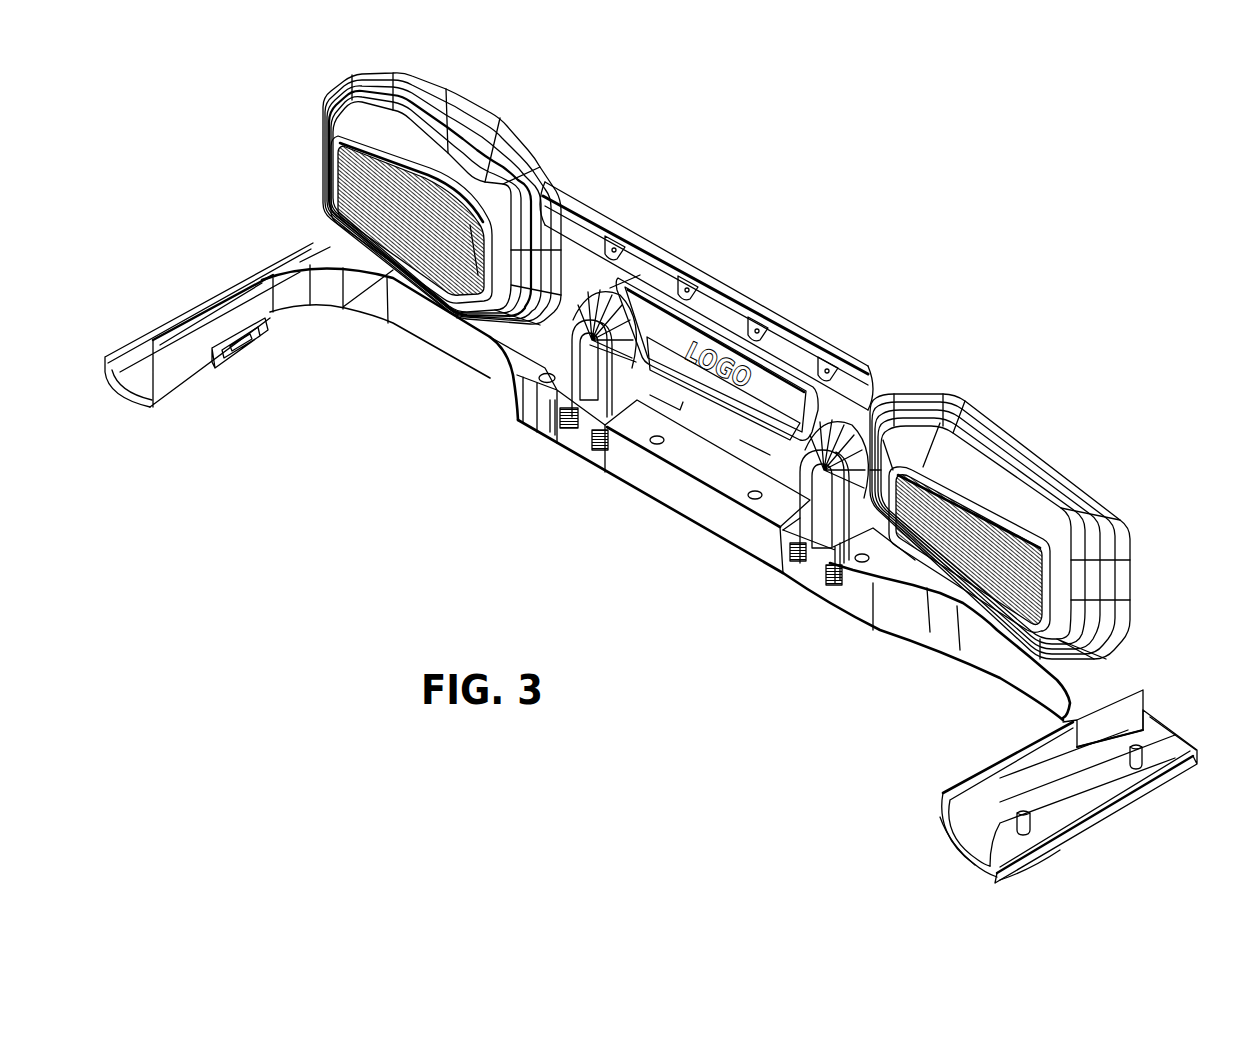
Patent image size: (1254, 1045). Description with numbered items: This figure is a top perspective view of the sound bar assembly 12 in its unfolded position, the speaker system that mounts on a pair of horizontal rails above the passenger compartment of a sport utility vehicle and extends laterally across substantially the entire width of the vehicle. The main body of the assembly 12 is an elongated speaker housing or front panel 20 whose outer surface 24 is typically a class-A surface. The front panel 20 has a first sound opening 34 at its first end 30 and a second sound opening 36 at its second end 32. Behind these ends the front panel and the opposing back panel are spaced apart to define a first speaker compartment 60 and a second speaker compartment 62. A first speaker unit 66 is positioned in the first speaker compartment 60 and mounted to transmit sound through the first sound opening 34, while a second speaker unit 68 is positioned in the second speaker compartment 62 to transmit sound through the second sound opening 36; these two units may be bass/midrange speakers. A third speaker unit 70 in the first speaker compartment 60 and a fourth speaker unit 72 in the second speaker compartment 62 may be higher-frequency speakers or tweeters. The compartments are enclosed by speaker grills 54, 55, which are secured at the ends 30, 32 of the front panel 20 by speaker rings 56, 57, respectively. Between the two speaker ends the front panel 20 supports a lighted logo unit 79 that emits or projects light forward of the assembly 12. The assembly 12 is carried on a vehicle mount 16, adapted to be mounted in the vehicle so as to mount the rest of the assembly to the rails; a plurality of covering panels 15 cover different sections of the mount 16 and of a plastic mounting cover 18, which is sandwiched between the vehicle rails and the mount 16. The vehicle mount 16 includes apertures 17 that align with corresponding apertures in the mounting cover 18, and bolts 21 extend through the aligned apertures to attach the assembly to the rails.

The sound bar assembly 12 is at (760, 322).
The covering panels 15 is at (612, 262).
The vehicle mount 16 is at (1068, 829).
The apertures 17 is at (948, 858).
The plastic mounting cover 18 is at (1007, 884).
The front panel 20 is at (1035, 528).
The bolts 21 is at (1128, 745).
The outer surface 24 is at (747, 513).
The first end 30 is at (391, 176).
The second end 32 is at (1103, 648).
The first sound opening 34 is at (445, 330).
The second sound opening 36 is at (920, 593).
The speaker grill 54 is at (320, 312).
The speaker grill 55 is at (949, 603).
The speaker ring 56 is at (556, 190).
The speaker ring 57 is at (1058, 604).
The first speaker compartment 60 is at (333, 187).
The second speaker compartment 62 is at (990, 612).
The first speaker unit 66 is at (373, 150).
The second speaker unit 68 is at (1062, 572).
The third speaker unit 70 is at (345, 312).
The fourth speaker unit 72 is at (855, 614).
The lighted logo unit 79 is at (580, 420).